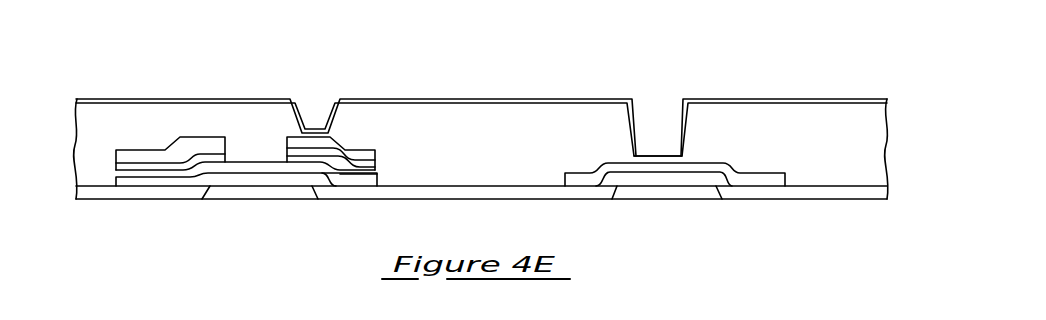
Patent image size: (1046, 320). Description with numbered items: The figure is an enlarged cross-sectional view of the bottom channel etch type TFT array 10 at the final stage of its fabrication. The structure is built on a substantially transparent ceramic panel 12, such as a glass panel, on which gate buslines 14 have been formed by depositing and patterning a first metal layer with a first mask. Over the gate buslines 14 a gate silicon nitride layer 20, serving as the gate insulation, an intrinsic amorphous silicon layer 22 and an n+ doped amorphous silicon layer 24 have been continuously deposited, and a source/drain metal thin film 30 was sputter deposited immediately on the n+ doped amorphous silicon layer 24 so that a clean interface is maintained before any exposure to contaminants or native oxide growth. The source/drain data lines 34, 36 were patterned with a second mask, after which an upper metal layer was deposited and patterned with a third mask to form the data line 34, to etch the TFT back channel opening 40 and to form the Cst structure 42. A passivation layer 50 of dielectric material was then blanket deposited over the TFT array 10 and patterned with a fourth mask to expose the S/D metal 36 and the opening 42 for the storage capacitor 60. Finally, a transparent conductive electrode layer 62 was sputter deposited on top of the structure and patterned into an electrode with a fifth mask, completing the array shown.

The TFT array 10 is at (513, 88).
The transparent ceramic panel 12 is at (580, 234).
The gate buslines 14 is at (262, 195).
The gate silicon nitride layer 20 is at (862, 192).
The intrinsic amorphous silicon layer 22 is at (380, 182).
The n+ doped amorphous silicon layer 24 is at (349, 176).
The source/drain metal thin film 30 is at (366, 168).
The data line 34 is at (190, 143).
The S/D metal 36 is at (352, 152).
The TFT back channel opening 40 is at (250, 153).
The Cst structure 42 is at (660, 147).
The passivation layer 50 is at (342, 117).
The storage capacitor 60 is at (642, 88).
The transparent conductive electrode layer 62 is at (445, 100).